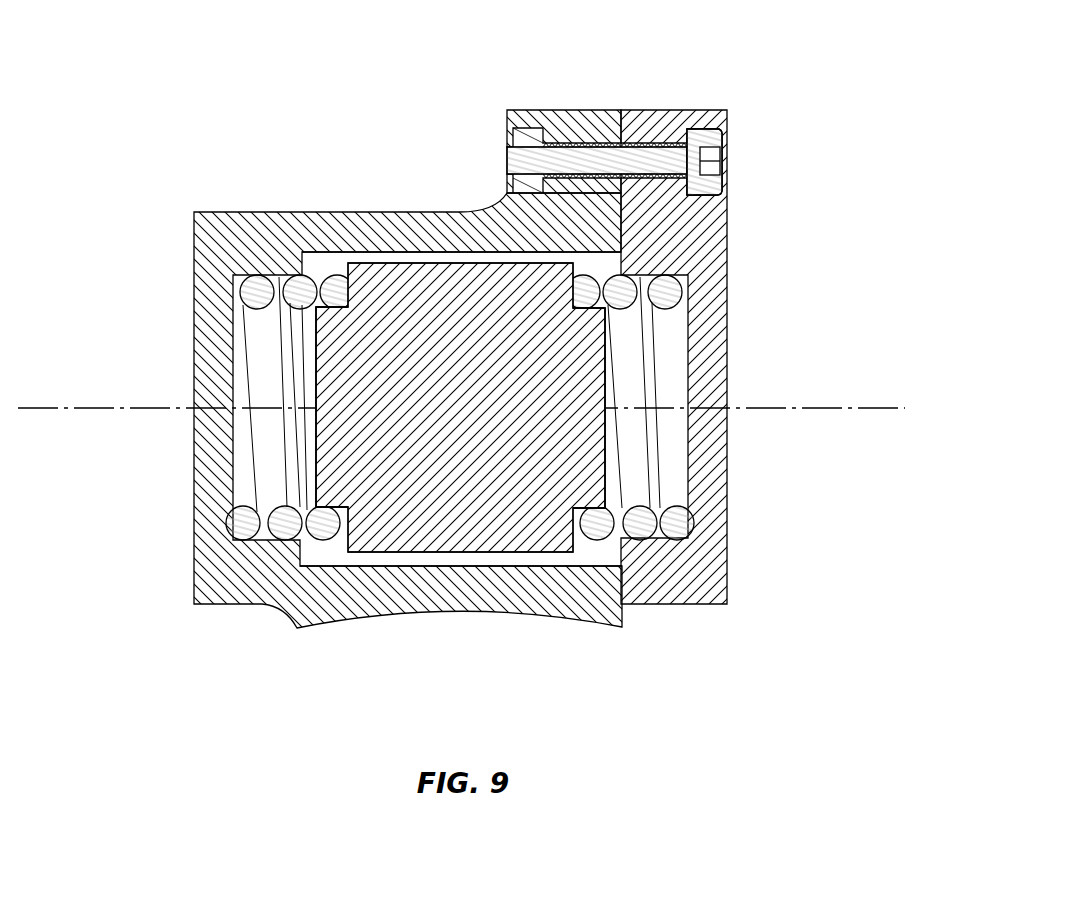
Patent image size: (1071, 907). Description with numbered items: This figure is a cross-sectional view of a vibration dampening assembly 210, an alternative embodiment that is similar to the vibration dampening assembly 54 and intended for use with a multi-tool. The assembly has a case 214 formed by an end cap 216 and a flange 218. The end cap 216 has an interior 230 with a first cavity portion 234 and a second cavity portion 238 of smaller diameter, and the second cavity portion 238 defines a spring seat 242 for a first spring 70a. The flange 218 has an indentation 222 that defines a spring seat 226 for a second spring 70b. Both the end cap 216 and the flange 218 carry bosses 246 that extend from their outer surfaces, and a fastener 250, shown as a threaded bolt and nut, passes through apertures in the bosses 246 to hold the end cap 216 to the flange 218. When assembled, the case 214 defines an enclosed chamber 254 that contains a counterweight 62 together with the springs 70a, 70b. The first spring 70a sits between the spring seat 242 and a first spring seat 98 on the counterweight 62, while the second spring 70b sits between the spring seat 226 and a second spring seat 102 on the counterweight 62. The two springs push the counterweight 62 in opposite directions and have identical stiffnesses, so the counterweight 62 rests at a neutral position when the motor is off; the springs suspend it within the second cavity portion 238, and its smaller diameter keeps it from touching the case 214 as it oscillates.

The vibration dampening assembly 210 is at (254, 46).
The vibration dampening assembly 54 is at (114, 583).
The case 214 is at (408, 378).
The end cap 216 is at (377, 212).
The flange 218 is at (713, 223).
The interior 230 is at (312, 246).
The enclosed chamber 254 is at (579, 249).
The bosses 246 is at (563, 110).
The fastener 250 is at (756, 153).
The second cavity portion 238 is at (212, 482).
The spring seat 242 is at (270, 305).
The indentation 222 is at (711, 482).
The spring seat 226 is at (643, 303).
The first spring 70a is at (245, 532).
The second spring 70b is at (640, 528).
The first spring seat 98 is at (343, 505).
The counterweight 62 is at (389, 537).
The first cavity portion 234 is at (497, 560).
The second spring seat 102 is at (576, 497).